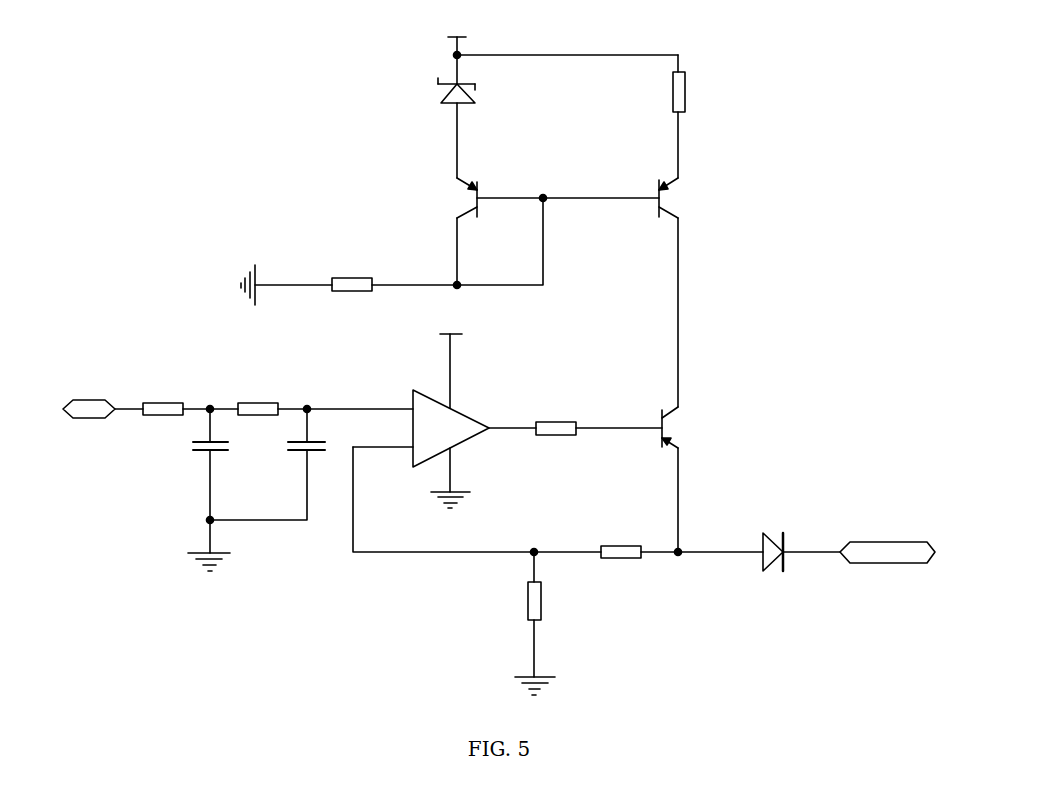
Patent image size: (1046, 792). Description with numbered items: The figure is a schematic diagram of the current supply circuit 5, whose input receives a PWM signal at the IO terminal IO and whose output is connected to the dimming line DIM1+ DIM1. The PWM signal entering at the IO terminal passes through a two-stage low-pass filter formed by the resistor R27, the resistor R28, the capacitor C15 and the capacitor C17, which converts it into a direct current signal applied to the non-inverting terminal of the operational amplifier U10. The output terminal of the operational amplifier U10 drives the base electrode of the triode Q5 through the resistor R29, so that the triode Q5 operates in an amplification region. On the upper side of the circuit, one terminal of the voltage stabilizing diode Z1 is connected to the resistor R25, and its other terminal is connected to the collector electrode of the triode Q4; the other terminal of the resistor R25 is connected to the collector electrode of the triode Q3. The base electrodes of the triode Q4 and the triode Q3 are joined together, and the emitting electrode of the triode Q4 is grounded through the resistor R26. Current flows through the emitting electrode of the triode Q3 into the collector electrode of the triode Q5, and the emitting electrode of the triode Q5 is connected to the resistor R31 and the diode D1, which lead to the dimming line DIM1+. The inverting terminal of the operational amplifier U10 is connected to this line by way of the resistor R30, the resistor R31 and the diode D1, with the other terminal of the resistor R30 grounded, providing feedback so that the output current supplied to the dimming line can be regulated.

The current supply circuit 5 is at (715, 362).
The resistor R25 is at (692, 92).
The resistor R26 is at (352, 295).
The resistor R27 is at (163, 401).
The resistor R28 is at (258, 401).
The resistor R29 is at (556, 420).
The resistor R30 is at (548, 614).
The resistor R31 is at (621, 544).
The capacitor C15 is at (193, 481).
The capacitor C17 is at (267, 464).
The voltage stabilizing diode Z1 is at (464, 84).
The triode Q3 is at (681, 198).
The triode Q4 is at (487, 198).
The triode Q5 is at (682, 427).
The operational amplifier U10 is at (467, 418).
The diode D1 is at (763, 544).
The IO terminal IO is at (89, 409).
The dimming line DIM1+ DIM1 is at (887, 552).